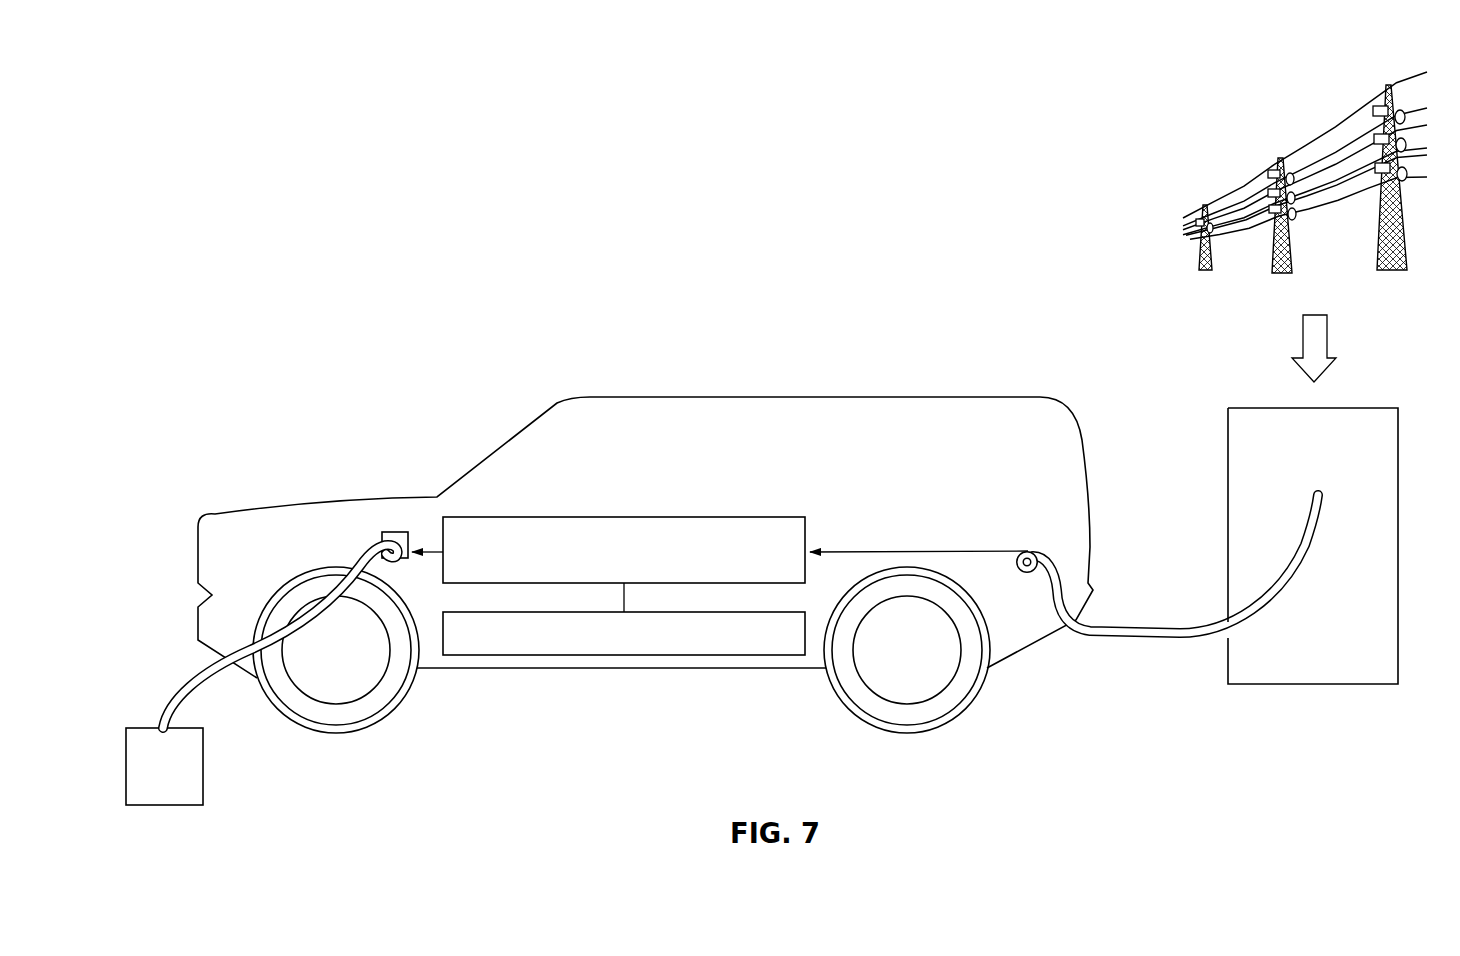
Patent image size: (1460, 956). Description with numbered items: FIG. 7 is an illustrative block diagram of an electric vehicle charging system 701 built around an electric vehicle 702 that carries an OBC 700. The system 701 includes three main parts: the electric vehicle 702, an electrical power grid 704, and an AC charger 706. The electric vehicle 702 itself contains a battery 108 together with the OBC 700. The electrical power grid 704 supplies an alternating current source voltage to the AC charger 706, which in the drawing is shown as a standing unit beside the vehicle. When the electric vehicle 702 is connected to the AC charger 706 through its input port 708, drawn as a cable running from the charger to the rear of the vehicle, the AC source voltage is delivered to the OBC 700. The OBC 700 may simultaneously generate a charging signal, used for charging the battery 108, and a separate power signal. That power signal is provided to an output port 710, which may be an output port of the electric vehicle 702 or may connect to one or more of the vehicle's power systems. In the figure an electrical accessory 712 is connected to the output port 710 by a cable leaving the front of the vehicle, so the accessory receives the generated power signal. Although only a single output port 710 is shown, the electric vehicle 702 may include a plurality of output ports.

The electric vehicle charging system 701 is at (366, 92).
The electric vehicle 702 is at (672, 397).
The OBC 700 is at (624, 517).
The battery 108 is at (624, 655).
The output port 710 is at (397, 531).
The electrical accessory 712 is at (143, 728).
The input port 708 is at (1033, 550).
The AC charger 706 is at (1303, 408).
The electrical power grid 704 is at (1283, 273).